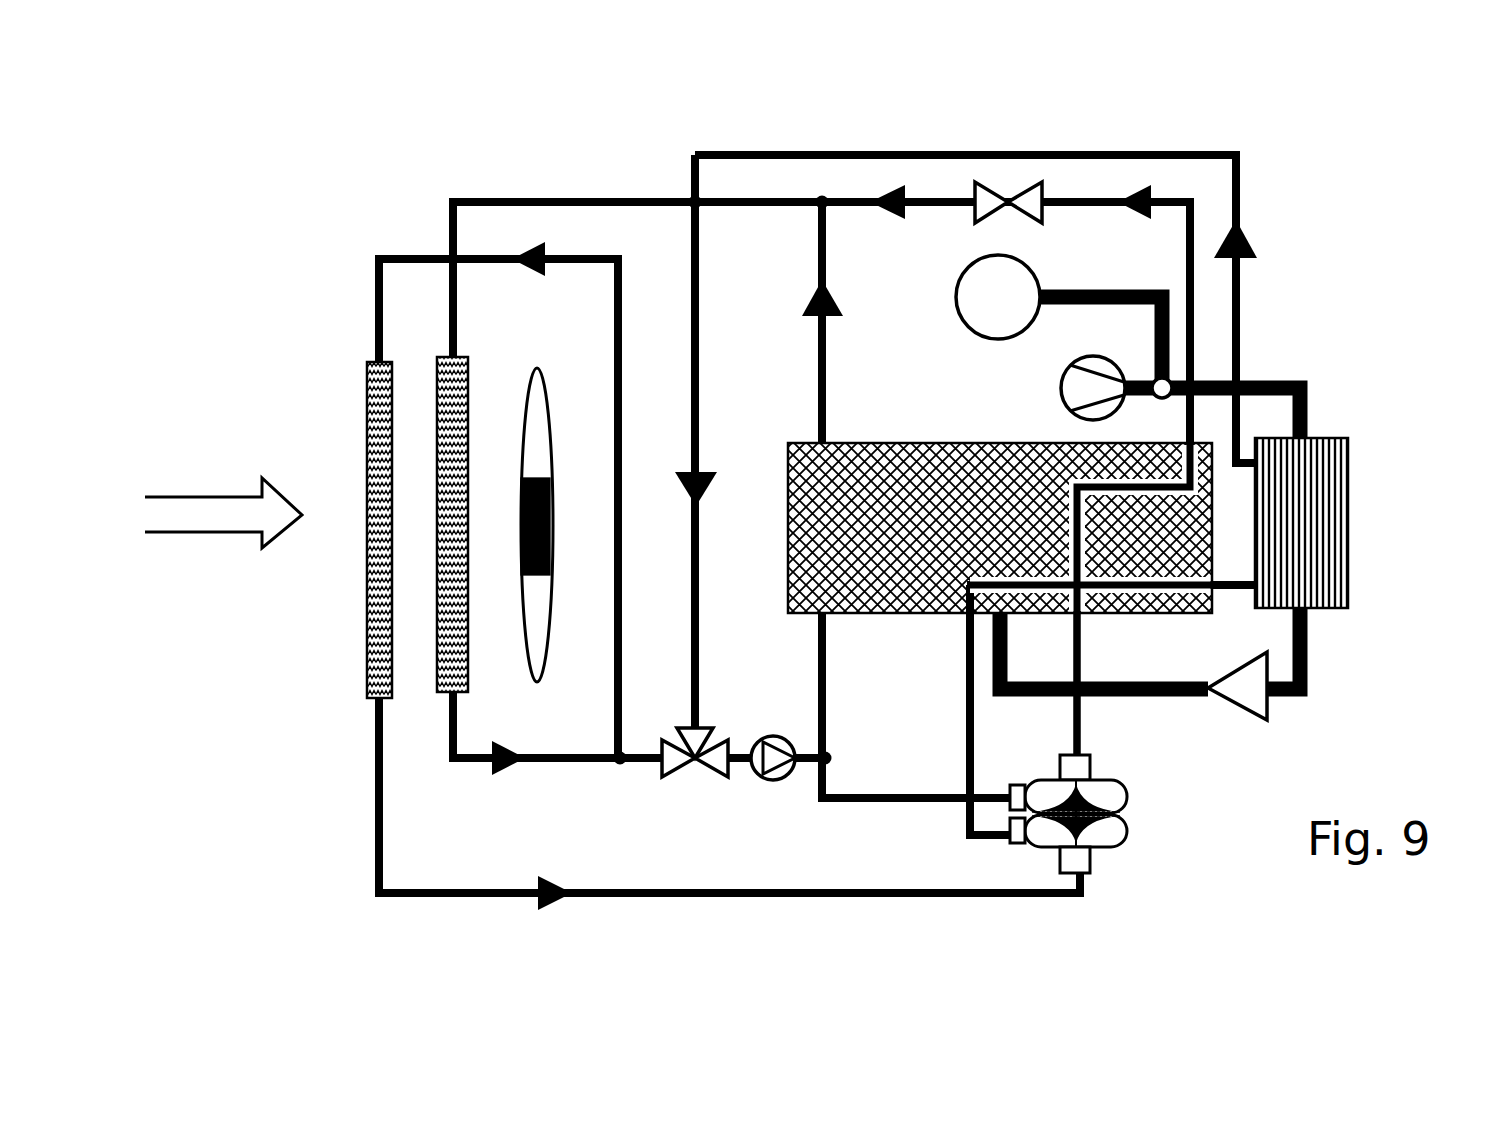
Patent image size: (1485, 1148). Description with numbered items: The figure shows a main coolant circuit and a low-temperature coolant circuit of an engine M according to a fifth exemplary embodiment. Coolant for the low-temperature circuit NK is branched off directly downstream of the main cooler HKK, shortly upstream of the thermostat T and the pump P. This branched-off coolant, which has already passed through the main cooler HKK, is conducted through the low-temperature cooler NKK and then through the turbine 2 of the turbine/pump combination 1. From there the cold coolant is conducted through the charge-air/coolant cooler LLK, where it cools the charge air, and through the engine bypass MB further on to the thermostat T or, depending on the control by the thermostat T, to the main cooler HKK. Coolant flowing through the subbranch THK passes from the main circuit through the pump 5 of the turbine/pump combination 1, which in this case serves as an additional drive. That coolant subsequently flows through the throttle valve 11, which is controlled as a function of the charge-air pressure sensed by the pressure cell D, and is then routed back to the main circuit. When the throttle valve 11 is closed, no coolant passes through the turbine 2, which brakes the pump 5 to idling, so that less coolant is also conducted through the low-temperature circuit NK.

The low-temperature cooler NKK is at (363, 397).
The main cooler HKK is at (440, 593).
The engine bypass MB is at (698, 417).
The engine M is at (905, 505).
The pressure cell D is at (1000, 339).
The throttle valve 11 is at (1008, 255).
The low-temperature circuit NK is at (1237, 302).
The charge-air/coolant cooler LLK is at (1330, 583).
The subbranch THK is at (883, 795).
The thermostat T is at (695, 786).
The pump P is at (765, 760).
The turbine/pump combination 1 is at (1111, 815).
The turbine 2 is at (1097, 797).
The pump 5 is at (1097, 837).